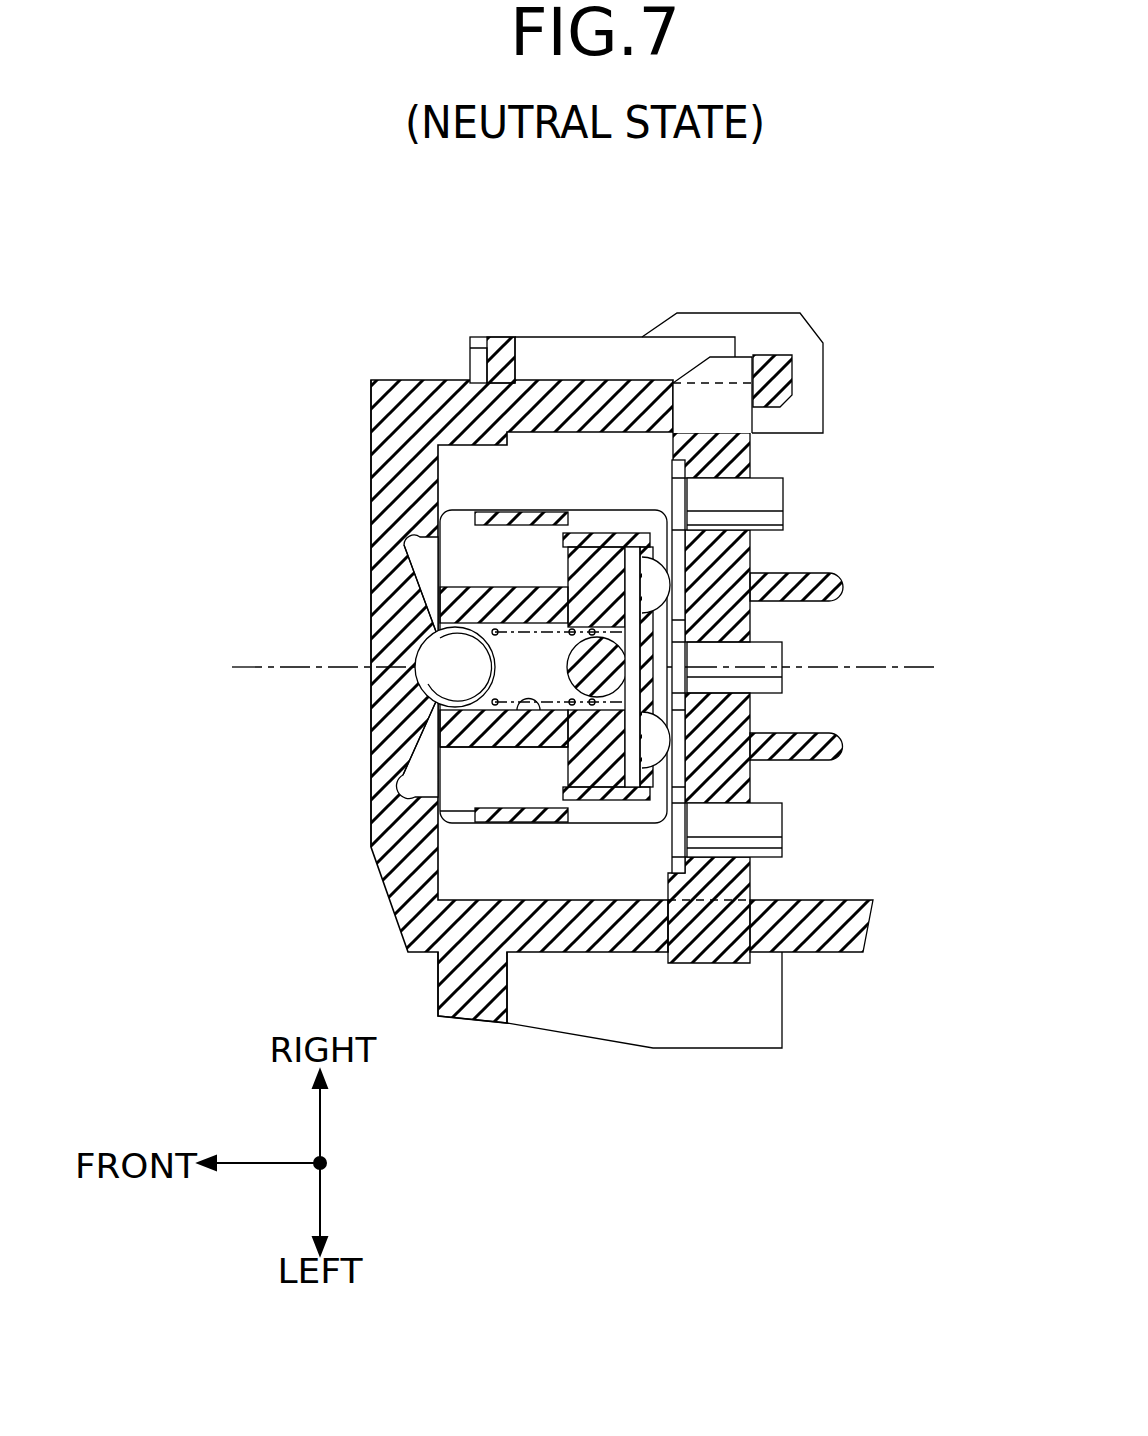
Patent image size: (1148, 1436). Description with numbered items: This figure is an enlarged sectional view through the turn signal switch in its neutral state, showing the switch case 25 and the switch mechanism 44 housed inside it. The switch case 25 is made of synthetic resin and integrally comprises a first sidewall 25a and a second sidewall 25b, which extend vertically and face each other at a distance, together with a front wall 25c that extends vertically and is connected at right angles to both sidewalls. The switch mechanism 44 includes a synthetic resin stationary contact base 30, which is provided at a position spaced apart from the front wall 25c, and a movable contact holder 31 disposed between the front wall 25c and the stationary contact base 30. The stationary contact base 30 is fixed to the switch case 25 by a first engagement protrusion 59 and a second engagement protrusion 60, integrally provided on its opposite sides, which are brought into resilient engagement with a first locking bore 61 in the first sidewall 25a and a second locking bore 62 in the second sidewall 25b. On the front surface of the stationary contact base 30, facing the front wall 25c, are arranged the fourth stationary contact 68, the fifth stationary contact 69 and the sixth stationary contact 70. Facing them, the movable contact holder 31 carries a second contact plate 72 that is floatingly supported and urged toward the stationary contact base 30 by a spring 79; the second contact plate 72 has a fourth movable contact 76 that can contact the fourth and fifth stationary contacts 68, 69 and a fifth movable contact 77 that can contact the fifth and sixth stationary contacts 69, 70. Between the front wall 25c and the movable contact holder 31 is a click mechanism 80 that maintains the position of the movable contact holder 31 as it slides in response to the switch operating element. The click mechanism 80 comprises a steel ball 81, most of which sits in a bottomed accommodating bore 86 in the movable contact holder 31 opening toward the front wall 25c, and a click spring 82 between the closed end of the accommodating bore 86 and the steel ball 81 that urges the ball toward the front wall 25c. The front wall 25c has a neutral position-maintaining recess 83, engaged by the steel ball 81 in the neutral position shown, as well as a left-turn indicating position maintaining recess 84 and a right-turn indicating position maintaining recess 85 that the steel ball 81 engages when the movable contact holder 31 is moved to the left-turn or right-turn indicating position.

The switch case 25 is at (387, 372).
The first sidewall 25a is at (552, 383).
The second sidewall 25b is at (547, 937).
The front wall 25c is at (383, 452).
The stationary contact base 30 is at (733, 708).
The movable contact holder 31 is at (490, 823).
The switch mechanism 44 is at (762, 469).
The first engagement protrusion 59 is at (723, 368).
The second engagement protrusion 60 is at (714, 950).
The first locking bore 61 is at (700, 388).
The second locking bore 62 is at (688, 923).
The fourth stationary contact 68 is at (672, 497).
The fifth stationary contact 69 is at (625, 693).
The sixth stationary contact 70 is at (668, 852).
The second contact plate 72 is at (600, 533).
The fourth movable contact 76 is at (688, 588).
The fifth movable contact 77 is at (672, 741).
The spring 79 is at (690, 654).
The click mechanism 80 is at (416, 690).
The steel ball 81 is at (420, 600).
The click spring 82 is at (500, 628).
The neutral position-maintaining recess 83 is at (445, 652).
The left-turn indicating position maintaining recess 84 is at (413, 538).
The right-turn indicating position maintaining recess 85 is at (410, 768).
The accommodating bore 86 is at (515, 712).